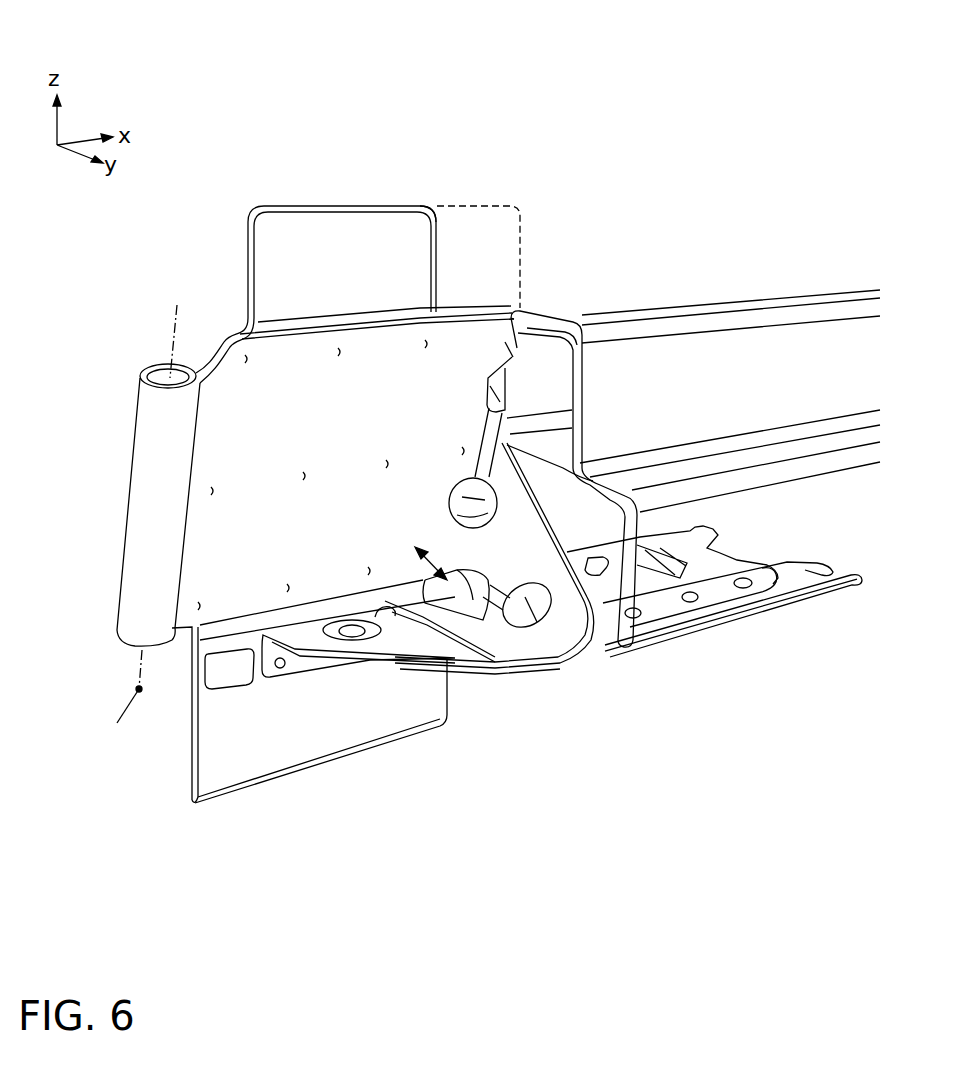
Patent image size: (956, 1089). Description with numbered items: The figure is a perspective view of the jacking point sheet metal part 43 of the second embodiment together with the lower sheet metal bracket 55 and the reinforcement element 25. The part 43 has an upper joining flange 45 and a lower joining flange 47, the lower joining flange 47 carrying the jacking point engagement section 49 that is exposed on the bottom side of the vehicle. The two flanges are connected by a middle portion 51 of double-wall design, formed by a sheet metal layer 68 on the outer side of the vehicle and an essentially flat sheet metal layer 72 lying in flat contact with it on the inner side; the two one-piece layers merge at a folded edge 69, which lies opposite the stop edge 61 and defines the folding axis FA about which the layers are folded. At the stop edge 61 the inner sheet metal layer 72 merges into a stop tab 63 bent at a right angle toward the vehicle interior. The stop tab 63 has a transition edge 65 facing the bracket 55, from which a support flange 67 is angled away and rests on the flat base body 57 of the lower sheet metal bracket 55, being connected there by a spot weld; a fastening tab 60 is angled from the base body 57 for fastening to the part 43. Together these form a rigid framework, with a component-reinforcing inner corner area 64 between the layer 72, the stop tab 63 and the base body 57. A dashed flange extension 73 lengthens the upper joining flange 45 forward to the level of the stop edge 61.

The reinforcement element 25 is at (857, 290).
The jacking point sheet metal part 43 is at (133, 358).
The upper joining flange 45 is at (343, 228).
The lower joining flange 47 is at (231, 753).
The jacking point engagement section 49 is at (191, 800).
The middle portion 51 is at (447, 80).
The lower sheet metal bracket 55 is at (617, 895).
The base body 57 is at (598, 647).
The fastening tab 60 is at (306, 662).
The stop edge 61 is at (512, 357).
The stop tab 63 is at (497, 551).
The inner corner area 64 is at (437, 559).
The transition edge 65 is at (563, 622).
The support flange 67 is at (517, 633).
The sheet metal layer 68 is at (468, 310).
The folded edge 69 is at (146, 483).
The sheet metal layer 72 is at (505, 339).
The flange extension 73 is at (441, 205).
The folding axis FA is at (117, 723).